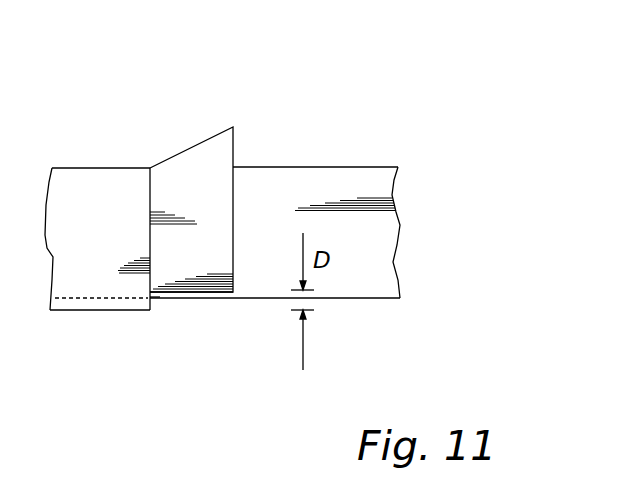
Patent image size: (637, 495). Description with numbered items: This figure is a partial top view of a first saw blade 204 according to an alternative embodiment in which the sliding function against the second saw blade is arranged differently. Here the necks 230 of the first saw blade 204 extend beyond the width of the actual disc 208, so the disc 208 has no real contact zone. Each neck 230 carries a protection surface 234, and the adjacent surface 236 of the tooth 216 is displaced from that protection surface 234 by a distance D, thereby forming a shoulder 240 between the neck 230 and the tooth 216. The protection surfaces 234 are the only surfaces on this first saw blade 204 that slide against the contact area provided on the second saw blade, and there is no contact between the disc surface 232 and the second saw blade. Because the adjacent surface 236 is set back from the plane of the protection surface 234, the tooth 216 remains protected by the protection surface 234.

The first saw blade 204 is at (272, 56).
The disc 208 is at (300, 175).
The tooth 216 is at (180, 153).
The neck 230 is at (82, 166).
The disc surface 232 is at (327, 298).
The protection surface 234 is at (88, 312).
The adjacent surface 236 is at (203, 295).
The shoulder 240 is at (158, 297).